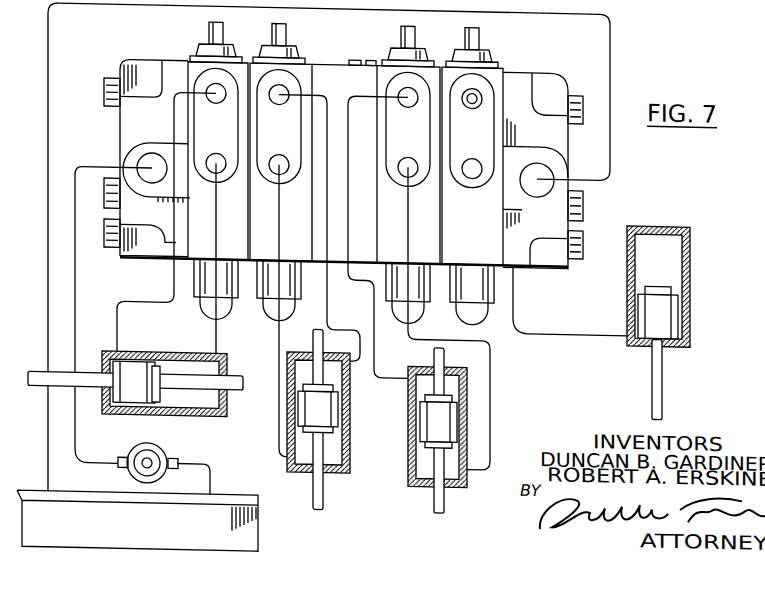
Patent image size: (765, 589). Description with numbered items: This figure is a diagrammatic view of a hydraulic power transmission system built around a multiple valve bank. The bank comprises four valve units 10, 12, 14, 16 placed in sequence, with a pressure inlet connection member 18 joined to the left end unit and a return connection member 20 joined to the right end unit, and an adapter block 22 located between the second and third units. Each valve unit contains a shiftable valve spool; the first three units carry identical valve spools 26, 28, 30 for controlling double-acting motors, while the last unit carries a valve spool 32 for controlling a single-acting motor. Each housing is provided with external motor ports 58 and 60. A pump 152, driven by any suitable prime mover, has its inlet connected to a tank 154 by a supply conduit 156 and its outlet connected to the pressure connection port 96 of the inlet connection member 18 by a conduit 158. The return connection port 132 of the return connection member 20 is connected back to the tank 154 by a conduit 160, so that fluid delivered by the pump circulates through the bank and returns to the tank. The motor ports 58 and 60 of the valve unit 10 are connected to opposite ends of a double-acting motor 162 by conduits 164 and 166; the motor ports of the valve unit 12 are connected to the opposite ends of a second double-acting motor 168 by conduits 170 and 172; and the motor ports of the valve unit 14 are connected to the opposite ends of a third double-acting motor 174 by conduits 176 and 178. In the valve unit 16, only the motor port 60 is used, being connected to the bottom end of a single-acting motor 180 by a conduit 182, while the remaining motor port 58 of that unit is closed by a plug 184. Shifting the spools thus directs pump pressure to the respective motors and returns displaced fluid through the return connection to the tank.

The valve unit 10 is at (242, 225).
The valve unit 12 is at (304, 224).
The valve unit 14 is at (432, 228).
The valve unit 16 is at (493, 215).
The pressure inlet connection member 18 is at (161, 51).
The return connection member 20 is at (555, 53).
The adapter block 22 is at (366, 50).
The valve spool 26 is at (226, 31).
The valve spool 28 is at (288, 31).
The valve spool 30 is at (417, 32).
The valve spool 32 is at (480, 32).
The motor port 58 is at (474, 111).
The motor port 60 is at (475, 158).
The pressure connection port 96 is at (153, 155).
The return connection port 132 is at (535, 158).
The pump 152 is at (210, 451).
The tank 154 is at (137, 520).
The supply conduit 156 is at (212, 482).
The conduit 158 is at (102, 169).
The conduit 160 is at (611, 50).
The double-acting motor 162 is at (180, 351).
The conduit 164 is at (166, 300).
The conduit 166 is at (218, 336).
The double-acting motor 168 is at (390, 424).
The conduit 170 is at (327, 303).
The conduit 172 is at (279, 434).
The double-acting motor 174 is at (409, 455).
The conduit 176 is at (375, 349).
The conduit 178 is at (491, 409).
The single-acting motor 180 is at (731, 280).
The conduit 182 is at (564, 307).
The plug 184 is at (475, 89).